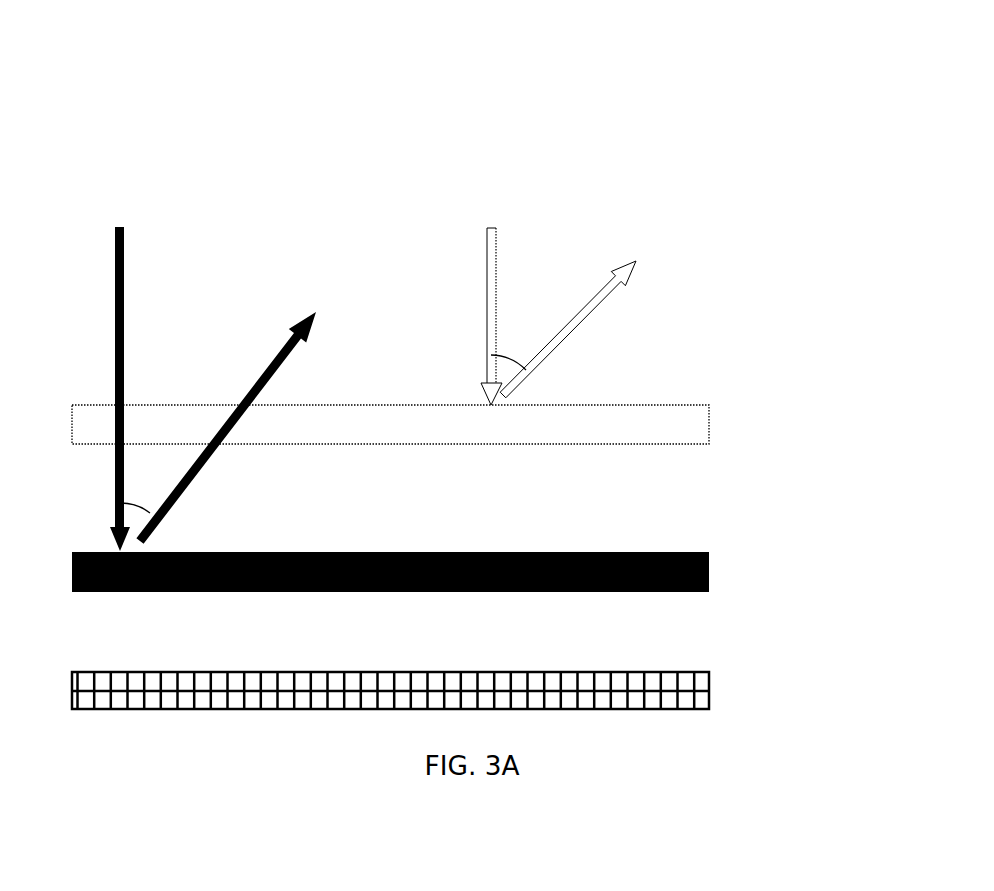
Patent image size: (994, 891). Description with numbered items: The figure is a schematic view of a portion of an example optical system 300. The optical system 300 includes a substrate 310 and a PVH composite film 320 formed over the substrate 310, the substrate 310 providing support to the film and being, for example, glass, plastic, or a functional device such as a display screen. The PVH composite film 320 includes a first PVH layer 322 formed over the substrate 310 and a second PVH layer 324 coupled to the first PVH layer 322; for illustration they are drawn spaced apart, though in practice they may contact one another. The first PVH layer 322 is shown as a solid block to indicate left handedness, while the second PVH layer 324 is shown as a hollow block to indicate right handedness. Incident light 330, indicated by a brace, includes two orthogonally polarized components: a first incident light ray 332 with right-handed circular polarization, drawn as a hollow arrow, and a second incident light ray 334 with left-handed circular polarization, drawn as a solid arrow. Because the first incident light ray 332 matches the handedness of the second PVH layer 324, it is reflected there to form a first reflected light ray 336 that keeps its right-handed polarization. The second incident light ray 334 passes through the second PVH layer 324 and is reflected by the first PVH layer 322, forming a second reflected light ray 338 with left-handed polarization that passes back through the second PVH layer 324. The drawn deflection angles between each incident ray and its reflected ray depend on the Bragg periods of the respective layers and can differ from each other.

The optical system 300 is at (392, 26).
The substrate 310 is at (709, 690).
The PVH composite film 320 is at (848, 385).
The first PVH layer 322 is at (709, 572).
The second PVH layer 324 is at (709, 424).
The incident light 330 is at (36, 128).
The first incident light ray 332 is at (488, 228).
The second incident light ray 334 is at (119, 227).
The first reflected light ray 336 is at (607, 298).
The second reflected light ray 338 is at (178, 495).